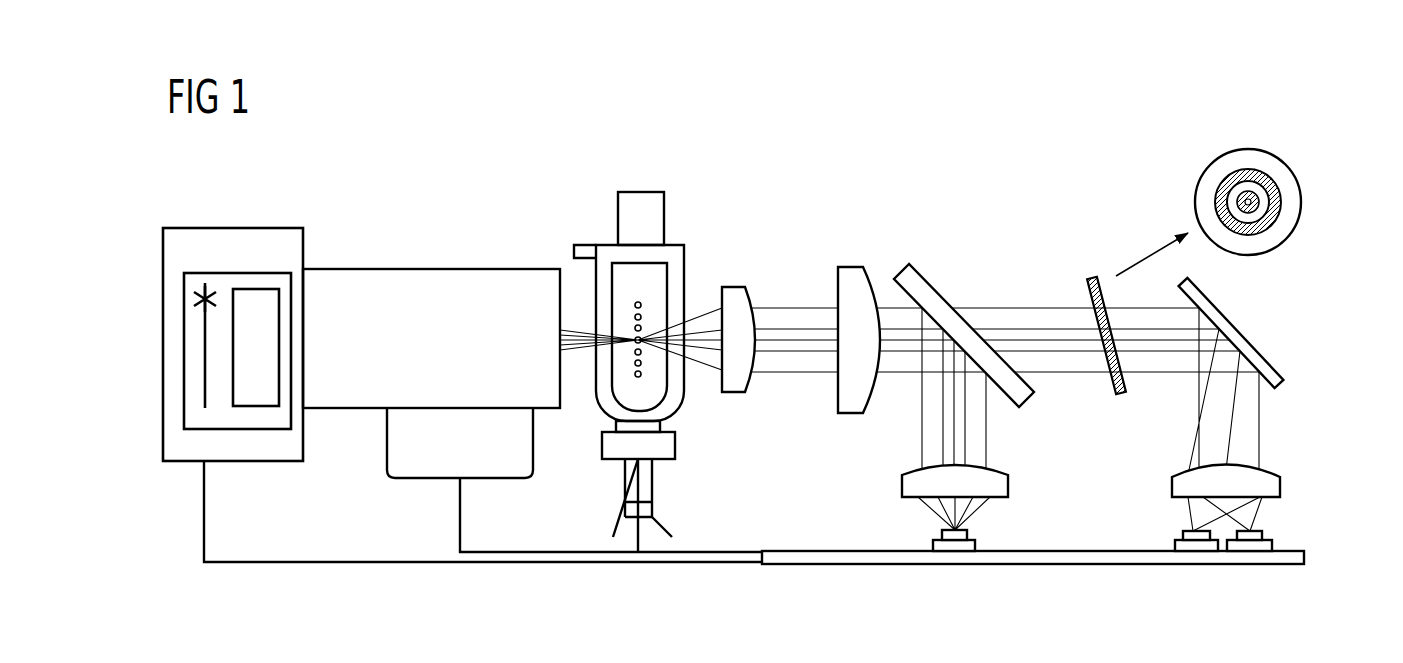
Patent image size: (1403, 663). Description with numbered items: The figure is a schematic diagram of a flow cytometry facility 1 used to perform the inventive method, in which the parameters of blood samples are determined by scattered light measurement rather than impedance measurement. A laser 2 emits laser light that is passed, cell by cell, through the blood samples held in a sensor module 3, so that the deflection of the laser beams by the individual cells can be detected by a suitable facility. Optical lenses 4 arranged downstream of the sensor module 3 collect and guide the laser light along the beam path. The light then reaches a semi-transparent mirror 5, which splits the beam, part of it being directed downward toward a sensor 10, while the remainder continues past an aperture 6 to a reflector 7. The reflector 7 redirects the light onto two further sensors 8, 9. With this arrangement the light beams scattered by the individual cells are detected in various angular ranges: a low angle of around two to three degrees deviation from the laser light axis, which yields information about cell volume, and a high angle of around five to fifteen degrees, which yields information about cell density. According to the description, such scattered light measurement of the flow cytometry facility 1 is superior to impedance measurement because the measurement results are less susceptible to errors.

The flow cytometry facility 1 is at (276, 617).
The laser 2 is at (231, 228).
The sensor module 3 is at (637, 192).
The optical lenses 4 is at (731, 287).
The semi-transparent mirror 5 is at (918, 282).
The aperture 6 is at (1092, 277).
The reflector 7 is at (1263, 356).
The sensor 8 is at (1284, 538).
The sensor 9 is at (1166, 538).
The sensor 10 is at (918, 540).